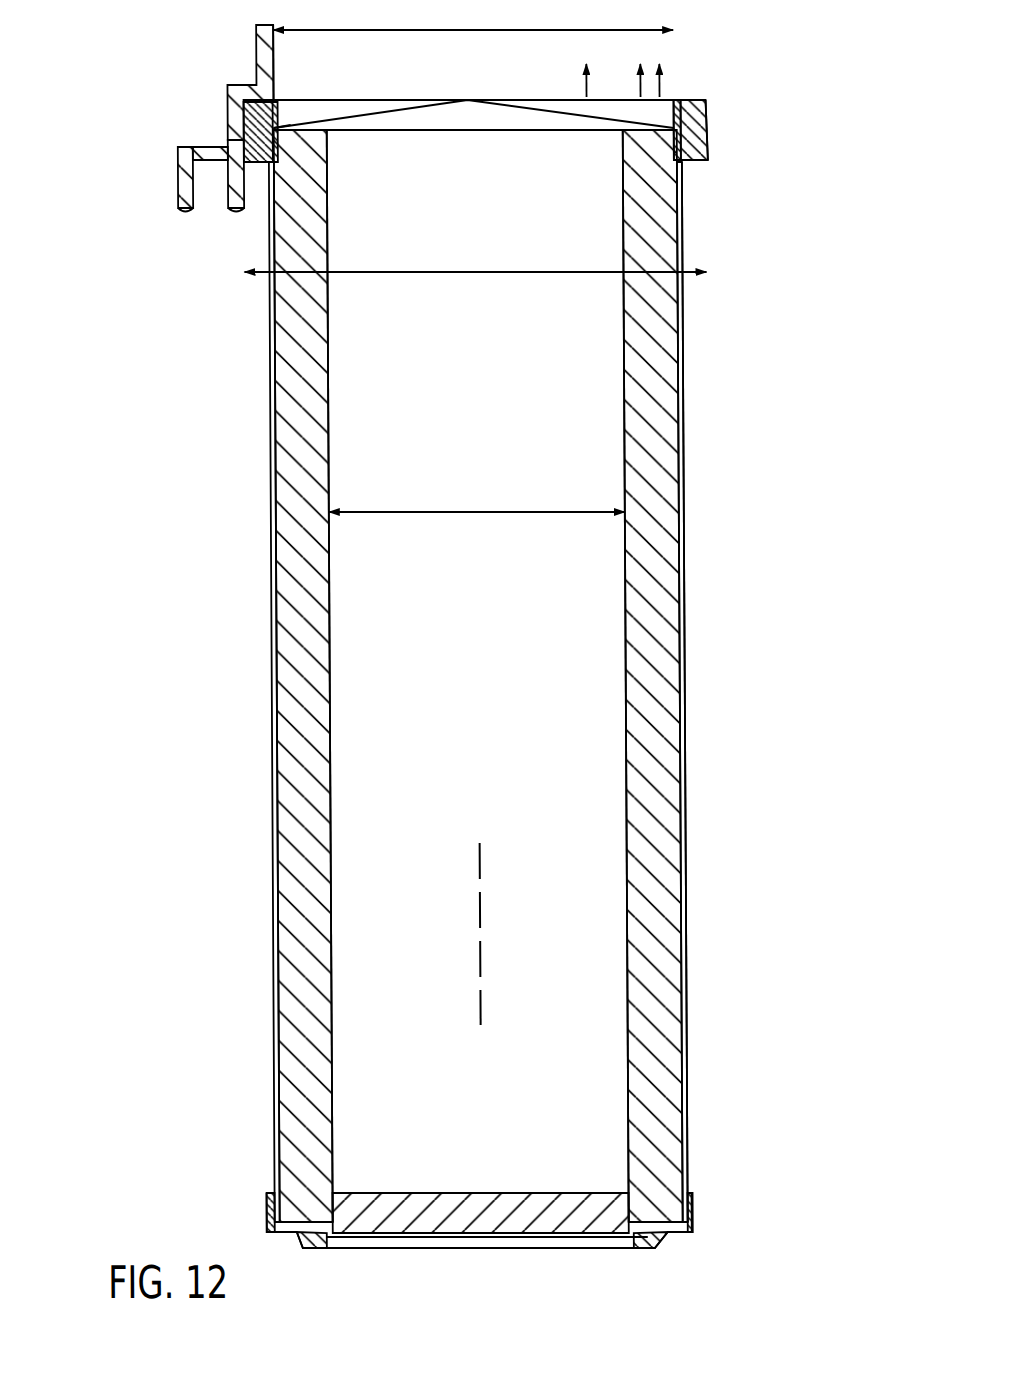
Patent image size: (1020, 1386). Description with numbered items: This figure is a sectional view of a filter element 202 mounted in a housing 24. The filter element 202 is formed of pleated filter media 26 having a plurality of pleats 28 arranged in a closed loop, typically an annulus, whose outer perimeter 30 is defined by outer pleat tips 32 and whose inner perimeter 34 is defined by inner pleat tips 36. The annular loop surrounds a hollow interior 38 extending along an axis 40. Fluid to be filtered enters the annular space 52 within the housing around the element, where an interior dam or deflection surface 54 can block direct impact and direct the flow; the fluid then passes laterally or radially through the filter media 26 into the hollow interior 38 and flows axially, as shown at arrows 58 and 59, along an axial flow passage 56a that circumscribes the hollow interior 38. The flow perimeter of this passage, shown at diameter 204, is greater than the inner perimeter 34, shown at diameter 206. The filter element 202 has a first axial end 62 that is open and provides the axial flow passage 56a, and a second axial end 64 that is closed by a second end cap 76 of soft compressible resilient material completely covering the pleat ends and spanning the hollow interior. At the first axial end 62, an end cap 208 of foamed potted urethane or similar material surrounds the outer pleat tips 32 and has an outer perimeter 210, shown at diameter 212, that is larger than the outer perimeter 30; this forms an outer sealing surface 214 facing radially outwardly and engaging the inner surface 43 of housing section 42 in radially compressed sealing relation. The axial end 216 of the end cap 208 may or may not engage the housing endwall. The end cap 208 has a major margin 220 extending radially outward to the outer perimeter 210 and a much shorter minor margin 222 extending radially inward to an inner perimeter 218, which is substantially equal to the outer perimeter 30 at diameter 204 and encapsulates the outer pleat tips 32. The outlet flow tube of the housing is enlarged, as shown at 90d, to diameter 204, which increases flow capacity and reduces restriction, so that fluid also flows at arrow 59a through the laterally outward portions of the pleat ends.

The housing 24 is at (225, 85).
The enlarged outlet flow tube 90d is at (276, 50).
The inner perimeter of end cap 218 is at (279, 128).
The inner surface of housing section 43 is at (243, 119).
The outer sealing surface 214 is at (243, 140).
The housing section 42 is at (177, 176).
The annular space 52 is at (203, 208).
The interior dam or deflection surface 54 is at (226, 198).
The axial flow passage 56a is at (495, 100).
The arrows 58 is at (583, 78).
The arrows 59 is at (637, 84).
The arrow 59a is at (681, 96).
The first axial end 62 is at (683, 97).
The axial end of end cap 216 is at (703, 101).
The end cap 208 is at (707, 124).
The outer perimeter of end cap 210 is at (705, 142).
The major margin 220 is at (699, 162).
The minor margin 222 is at (676, 161).
The diameter 204 is at (569, 29).
The diameter 212 is at (418, 273).
The diameter 206 is at (470, 513).
The filter element 202 is at (194, 407).
The pleated filter media 26 is at (288, 518).
The pleats 28 is at (649, 468).
The outer perimeter 30 is at (679, 408).
The outer pleat tips 32 is at (676, 366).
The inner perimeter 34 is at (620, 401).
The inner pleat tips 36 is at (621, 355).
The hollow interior 38 is at (391, 452).
The axis 40 is at (475, 910).
The second end cap 76 is at (684, 1217).
The second axial end 64 is at (691, 1238).